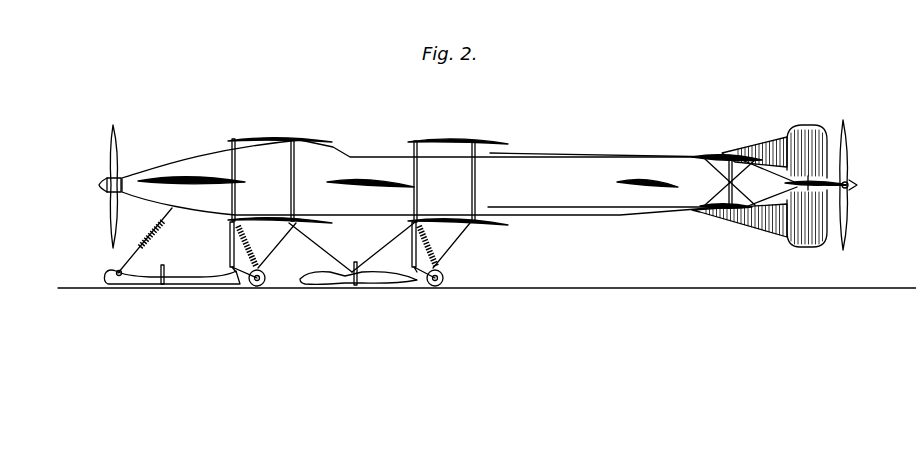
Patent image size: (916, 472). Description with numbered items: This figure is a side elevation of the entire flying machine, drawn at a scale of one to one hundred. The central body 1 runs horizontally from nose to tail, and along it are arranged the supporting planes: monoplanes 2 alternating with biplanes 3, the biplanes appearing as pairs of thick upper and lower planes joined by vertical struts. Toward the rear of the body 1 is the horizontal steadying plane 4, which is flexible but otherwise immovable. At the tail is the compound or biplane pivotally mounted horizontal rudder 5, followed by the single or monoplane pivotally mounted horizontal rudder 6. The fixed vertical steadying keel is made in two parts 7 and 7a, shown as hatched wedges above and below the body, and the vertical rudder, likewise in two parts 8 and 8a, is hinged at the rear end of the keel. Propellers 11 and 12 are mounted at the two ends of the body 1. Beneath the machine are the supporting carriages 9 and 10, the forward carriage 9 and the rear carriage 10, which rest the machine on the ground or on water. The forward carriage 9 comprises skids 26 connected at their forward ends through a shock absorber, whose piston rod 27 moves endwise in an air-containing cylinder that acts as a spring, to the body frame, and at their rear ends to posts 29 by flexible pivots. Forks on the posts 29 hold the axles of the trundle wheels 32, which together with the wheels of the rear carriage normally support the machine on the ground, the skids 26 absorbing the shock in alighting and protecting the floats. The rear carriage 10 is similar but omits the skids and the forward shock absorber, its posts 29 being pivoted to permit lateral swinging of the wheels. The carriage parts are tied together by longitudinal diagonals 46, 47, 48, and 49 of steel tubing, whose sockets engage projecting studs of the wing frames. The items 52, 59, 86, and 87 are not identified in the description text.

The body 1 is at (564, 170).
The supporting monoplanes 2 is at (160, 177).
The supporting biplanes 3 is at (262, 137).
The horizontal steadying plane 4 is at (640, 178).
The biplane horizontal rudder 5 is at (735, 100).
The monoplane horizontal rudder 6 is at (799, 180).
The vertical steadying keel part 7 is at (752, 147).
The vertical steadying keel part 7a is at (762, 228).
The vertical rudder part 8 is at (812, 128).
The vertical rudder part 8a is at (812, 243).
The forward carriage 9 is at (269, 275).
The rear carriage 10 is at (358, 261).
The propeller 11 is at (110, 213).
The propeller 12 is at (850, 205).
The skids 26 is at (124, 286).
The piston rod 27 is at (143, 249).
The posts 29 is at (229, 236).
The trundle wheels 32 is at (262, 287).
The longitudinal diagonal 46 is at (275, 248).
The longitudinal diagonal 47 is at (324, 248).
The longitudinal diagonal 48 is at (390, 243).
The longitudinal diagonal 49 is at (456, 242).
The rear wheel 52 is at (444, 278).
The skid post 59 is at (148, 283).
The upper longitudinal beam 86 is at (540, 141).
The lower longitudinal beam 87 is at (545, 203).